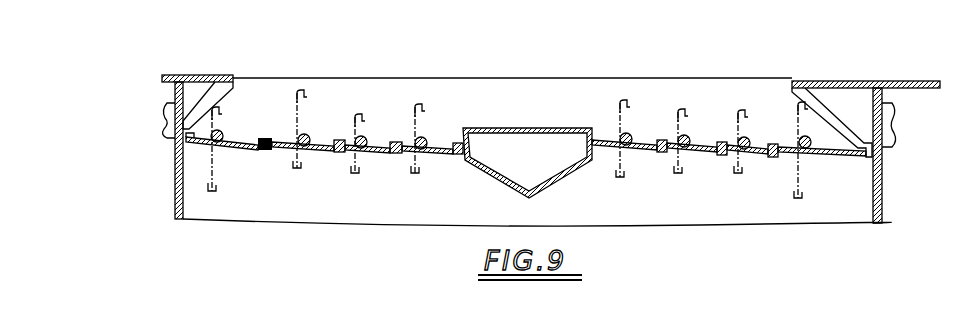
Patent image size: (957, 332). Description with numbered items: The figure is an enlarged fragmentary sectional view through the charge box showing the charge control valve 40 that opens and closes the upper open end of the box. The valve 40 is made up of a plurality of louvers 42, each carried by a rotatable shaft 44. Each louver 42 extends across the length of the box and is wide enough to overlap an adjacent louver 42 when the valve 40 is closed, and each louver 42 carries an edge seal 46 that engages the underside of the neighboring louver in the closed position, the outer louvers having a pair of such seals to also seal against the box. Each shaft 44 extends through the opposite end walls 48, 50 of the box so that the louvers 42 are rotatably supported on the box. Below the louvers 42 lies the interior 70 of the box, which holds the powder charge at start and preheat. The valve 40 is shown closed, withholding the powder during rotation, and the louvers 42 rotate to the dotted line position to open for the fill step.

The charge control valve 40 is at (441, 138).
The louver 42 is at (323, 150).
The rotatable shaft 44 is at (307, 134).
The edge seal 46 is at (264, 150).
The end wall 48 is at (175, 191).
The end wall 50 is at (883, 197).
The interior of box 70 is at (537, 171).